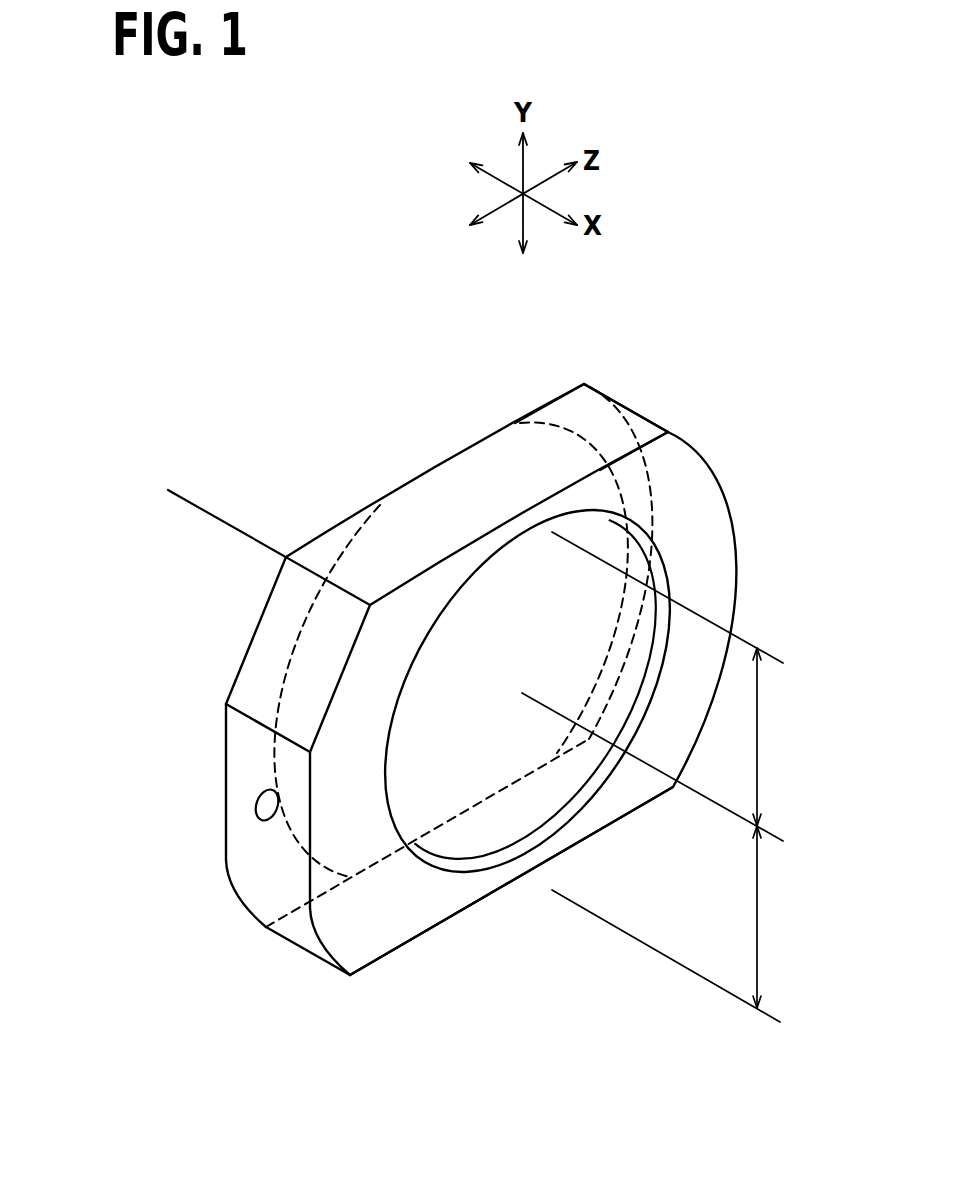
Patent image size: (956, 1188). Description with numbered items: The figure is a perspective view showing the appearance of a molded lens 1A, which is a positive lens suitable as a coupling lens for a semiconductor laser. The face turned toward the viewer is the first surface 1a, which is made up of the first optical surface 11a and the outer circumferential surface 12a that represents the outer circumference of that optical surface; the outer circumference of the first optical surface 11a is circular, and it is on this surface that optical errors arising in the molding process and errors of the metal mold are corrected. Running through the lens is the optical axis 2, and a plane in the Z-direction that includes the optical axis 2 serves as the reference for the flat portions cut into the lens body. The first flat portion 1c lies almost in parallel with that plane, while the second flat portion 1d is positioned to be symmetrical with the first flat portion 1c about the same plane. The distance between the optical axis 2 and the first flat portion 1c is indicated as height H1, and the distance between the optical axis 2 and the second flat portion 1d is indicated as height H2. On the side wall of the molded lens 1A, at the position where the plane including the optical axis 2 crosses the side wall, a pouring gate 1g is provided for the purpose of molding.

The molded lens 1A is at (447, 365).
The first surface 1a is at (523, 758).
The outer circumferential surface 12a is at (355, 920).
The first optical surface 11a is at (428, 800).
The first flat portion 1c is at (473, 905).
The second flat portion 1d is at (605, 432).
The pouring gate 1g is at (254, 805).
The optical axis 2 is at (211, 513).
The height H1 is at (678, 924).
The height H2 is at (665, 686).